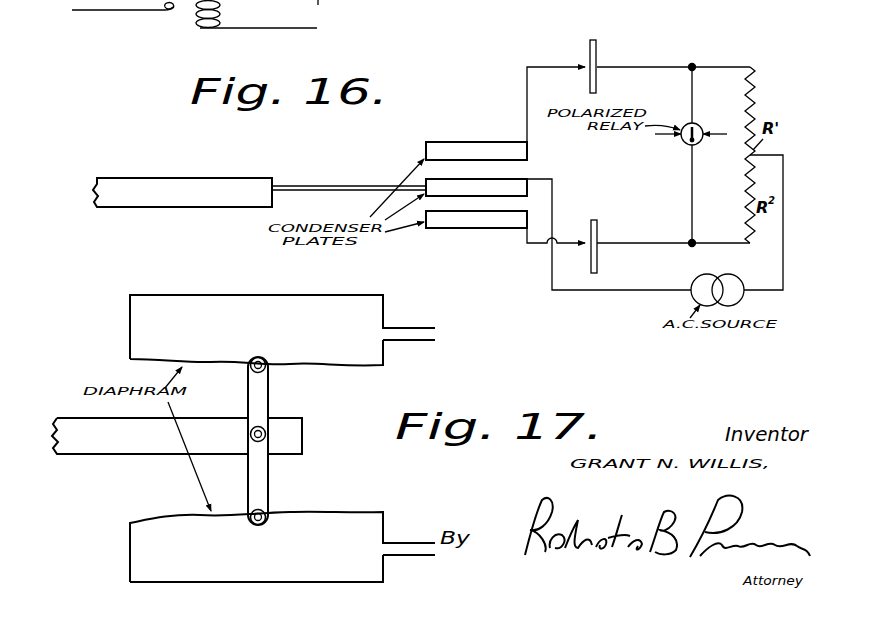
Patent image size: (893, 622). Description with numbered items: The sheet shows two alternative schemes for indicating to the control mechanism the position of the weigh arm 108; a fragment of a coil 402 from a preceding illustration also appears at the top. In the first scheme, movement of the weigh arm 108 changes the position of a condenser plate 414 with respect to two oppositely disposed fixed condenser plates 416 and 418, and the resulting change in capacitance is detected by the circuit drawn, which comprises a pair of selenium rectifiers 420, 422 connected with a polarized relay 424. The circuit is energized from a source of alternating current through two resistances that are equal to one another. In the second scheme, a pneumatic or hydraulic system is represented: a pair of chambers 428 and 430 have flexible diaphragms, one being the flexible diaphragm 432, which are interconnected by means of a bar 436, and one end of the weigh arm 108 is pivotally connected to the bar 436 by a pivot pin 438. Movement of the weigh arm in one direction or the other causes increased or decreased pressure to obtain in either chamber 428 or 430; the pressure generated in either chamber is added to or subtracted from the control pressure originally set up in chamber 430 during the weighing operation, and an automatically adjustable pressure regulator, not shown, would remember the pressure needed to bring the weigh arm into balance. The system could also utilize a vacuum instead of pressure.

In FIG. 16, the coil 402 is at (218, 11).
In FIG. 16, the weigh arm 108 is at (203, 168).
In FIG. 17, the weigh arm 108 is at (103, 449).
In FIG. 16, the condenser plate 414 is at (476, 188).
In FIG. 16, the fixed condenser plate 416 is at (452, 130).
In FIG. 16, the fixed condenser plate 418 is at (490, 216).
In FIG. 16, the selenium rectifier 420 is at (587, 41).
In FIG. 16, the selenium rectifier 422 is at (597, 226).
In FIG. 16, the polarized relay 424 is at (684, 144).
In FIG. 17, the chamber 428 is at (225, 287).
In FIG. 17, the chamber 430 is at (386, 522).
In FIG. 17, the flexible diaphragm 432 is at (339, 366).
In FIG. 17, the bar 436 is at (262, 466).
In FIG. 17, the pivot pin 438 is at (268, 433).